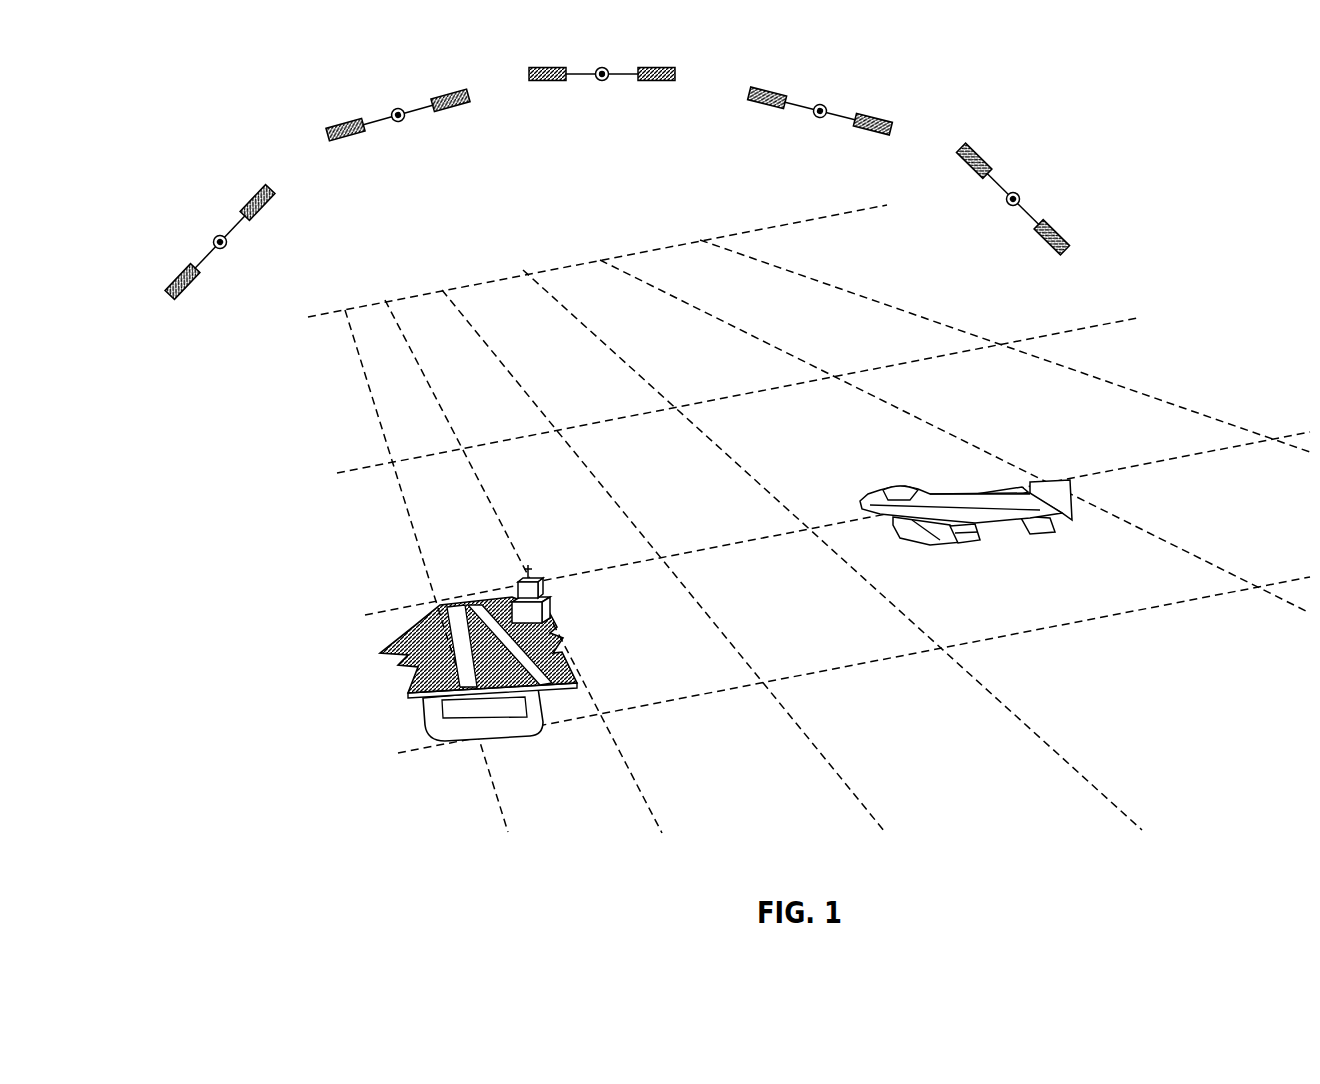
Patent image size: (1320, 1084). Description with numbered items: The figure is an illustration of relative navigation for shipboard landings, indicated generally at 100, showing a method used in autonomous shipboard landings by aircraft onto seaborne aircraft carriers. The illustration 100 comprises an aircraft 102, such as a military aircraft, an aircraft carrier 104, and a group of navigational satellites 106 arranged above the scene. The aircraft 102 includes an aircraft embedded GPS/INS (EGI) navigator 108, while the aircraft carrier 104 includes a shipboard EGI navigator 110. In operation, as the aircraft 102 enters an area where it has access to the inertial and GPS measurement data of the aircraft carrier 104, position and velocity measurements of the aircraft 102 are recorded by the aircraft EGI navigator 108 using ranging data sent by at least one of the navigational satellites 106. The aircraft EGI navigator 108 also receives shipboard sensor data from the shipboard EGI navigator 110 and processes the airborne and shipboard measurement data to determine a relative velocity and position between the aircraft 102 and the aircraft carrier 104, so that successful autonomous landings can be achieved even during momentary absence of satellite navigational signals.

The illustration of relative navigation for shipboard landings 100 is at (152, 417).
The aircraft 102 is at (968, 478).
The aircraft carrier 104 is at (410, 642).
The navigational satellites 106 is at (362, 180).
The aircraft EGI navigator 108 is at (970, 552).
The shipboard EGI navigator 110 is at (557, 617).